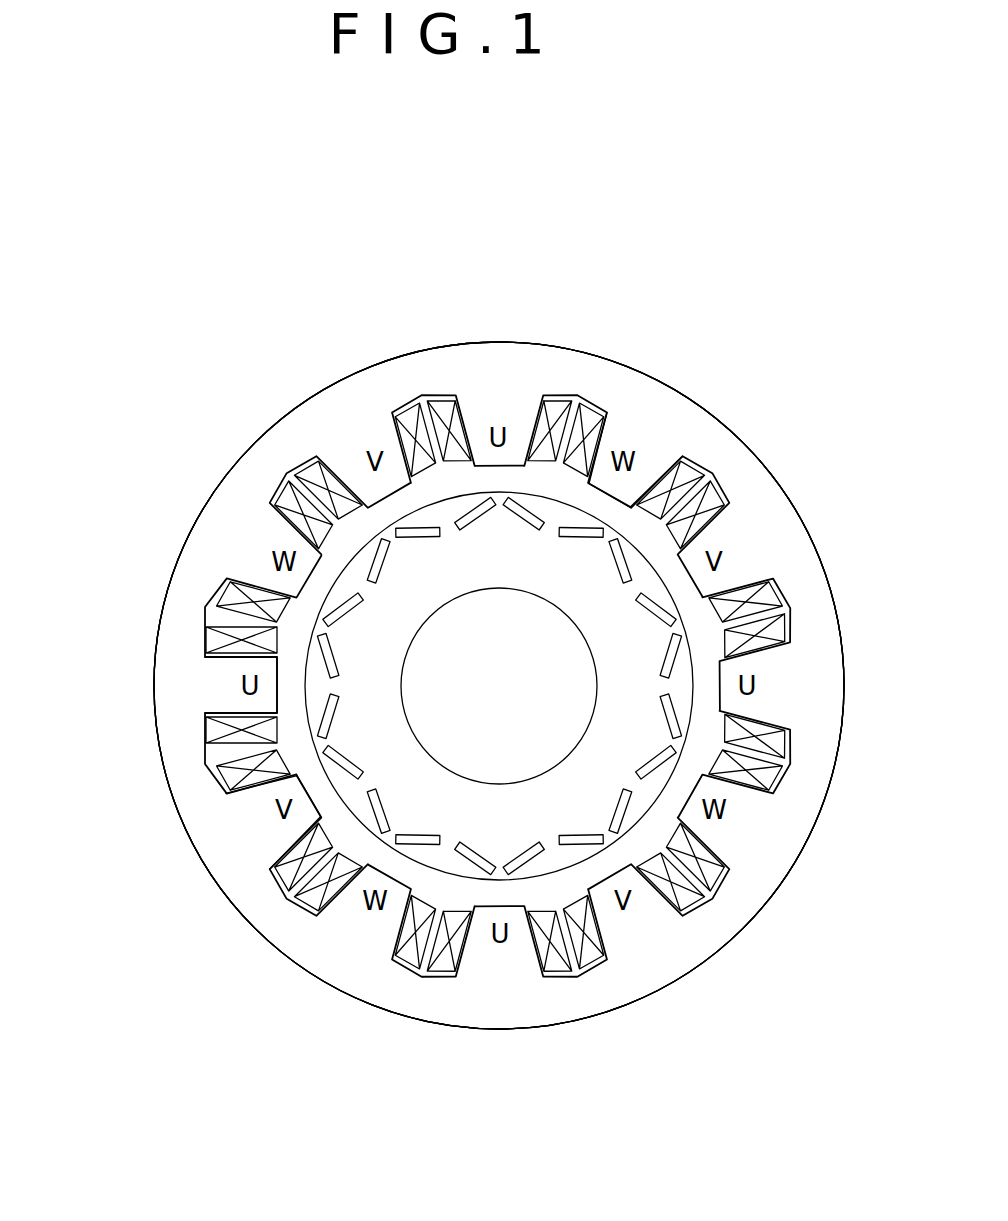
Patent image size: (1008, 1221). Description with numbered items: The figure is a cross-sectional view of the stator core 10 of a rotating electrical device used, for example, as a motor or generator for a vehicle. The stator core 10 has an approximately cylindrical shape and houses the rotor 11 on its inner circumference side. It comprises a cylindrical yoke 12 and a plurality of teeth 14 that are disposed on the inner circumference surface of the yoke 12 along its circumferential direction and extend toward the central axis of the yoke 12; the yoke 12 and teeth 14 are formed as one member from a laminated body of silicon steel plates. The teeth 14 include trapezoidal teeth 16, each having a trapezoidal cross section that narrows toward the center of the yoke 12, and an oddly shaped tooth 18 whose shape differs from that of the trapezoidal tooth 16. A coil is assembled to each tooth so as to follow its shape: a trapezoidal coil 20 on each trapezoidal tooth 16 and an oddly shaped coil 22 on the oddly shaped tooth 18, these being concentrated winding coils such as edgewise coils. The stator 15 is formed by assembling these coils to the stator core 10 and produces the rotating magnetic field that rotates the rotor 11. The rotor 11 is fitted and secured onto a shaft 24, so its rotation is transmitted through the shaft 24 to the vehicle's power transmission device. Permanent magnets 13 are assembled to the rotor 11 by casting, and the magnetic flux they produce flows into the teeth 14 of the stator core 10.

The stator core 10 is at (499, 618).
The rotor 11 is at (499, 686).
The yoke 12 is at (468, 685).
The permanent magnet 13 is at (499, 685).
The teeth 14 is at (443, 685).
The stator 15 is at (494, 652).
The trapezoidal tooth 16 is at (407, 587).
The oddly shaped tooth 18 is at (170, 751).
The trapezoidal coil 20 is at (504, 626).
The oddly shaped coil 22 is at (161, 630).
The shaft 24 is at (499, 686).